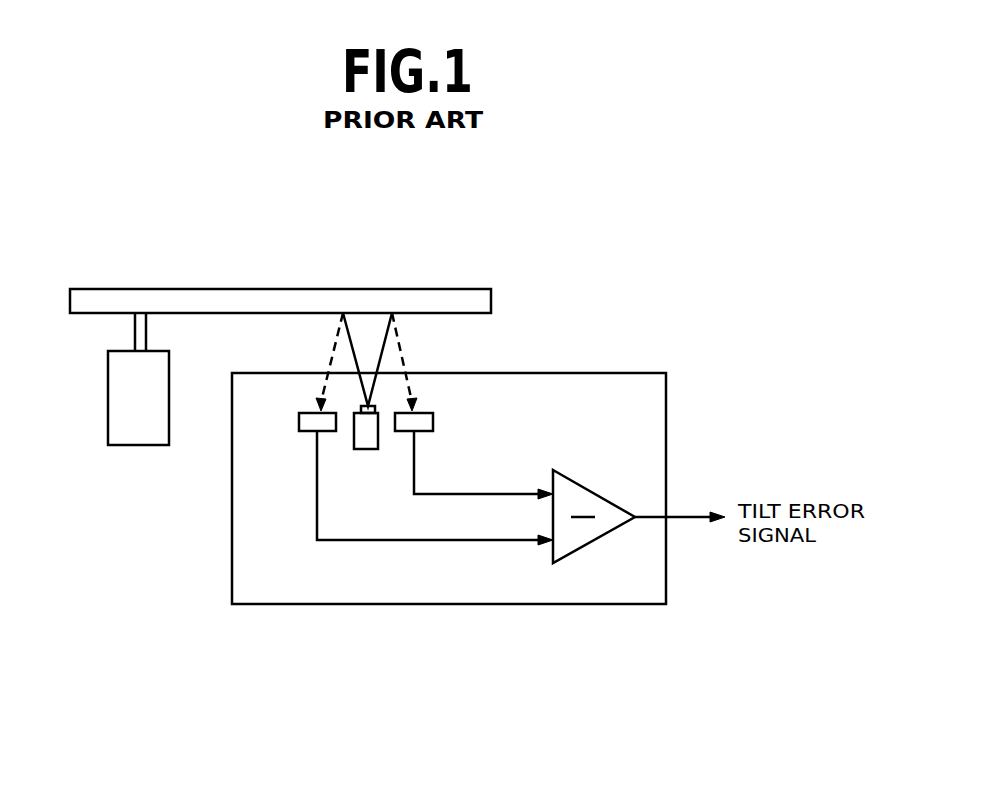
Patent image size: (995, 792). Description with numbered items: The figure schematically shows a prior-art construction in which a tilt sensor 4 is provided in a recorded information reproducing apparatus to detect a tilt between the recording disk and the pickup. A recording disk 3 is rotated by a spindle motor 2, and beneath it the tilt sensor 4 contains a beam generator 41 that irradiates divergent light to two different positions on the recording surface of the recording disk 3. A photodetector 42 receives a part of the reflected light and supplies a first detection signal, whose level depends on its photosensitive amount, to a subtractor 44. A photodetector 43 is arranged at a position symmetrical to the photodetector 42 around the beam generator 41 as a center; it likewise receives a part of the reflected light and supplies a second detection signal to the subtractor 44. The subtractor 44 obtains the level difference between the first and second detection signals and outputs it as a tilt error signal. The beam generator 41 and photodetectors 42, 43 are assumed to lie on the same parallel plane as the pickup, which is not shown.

The spindle motor 2 is at (108, 414).
The recording disk 3 is at (418, 289).
The tilt sensor 4 is at (290, 604).
The beam generator 41 is at (366, 449).
The photodetector 42 is at (310, 431).
The photodetector 43 is at (419, 431).
The subtractor 44 is at (592, 493).